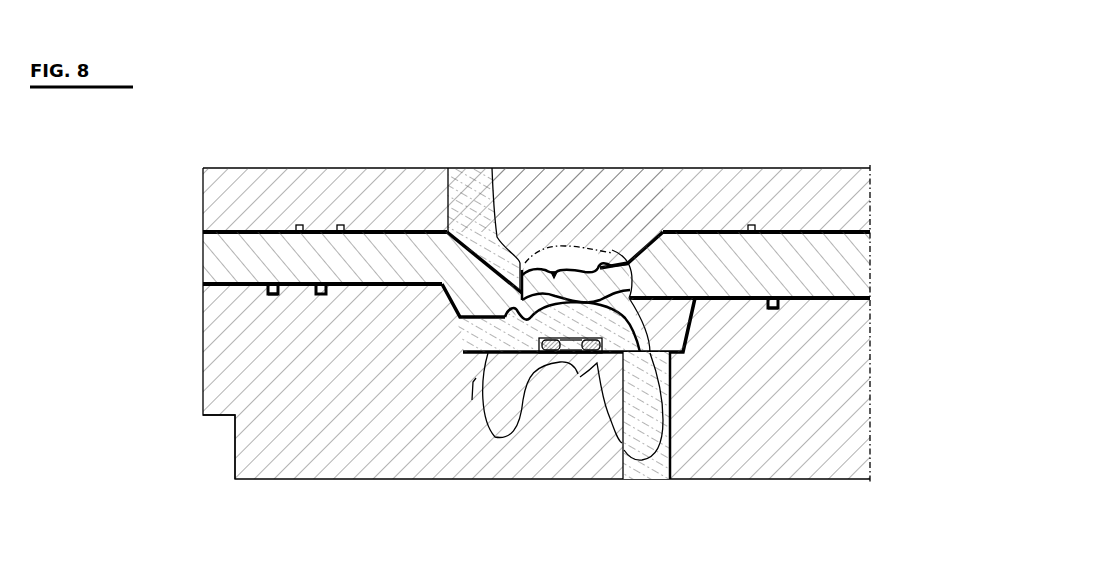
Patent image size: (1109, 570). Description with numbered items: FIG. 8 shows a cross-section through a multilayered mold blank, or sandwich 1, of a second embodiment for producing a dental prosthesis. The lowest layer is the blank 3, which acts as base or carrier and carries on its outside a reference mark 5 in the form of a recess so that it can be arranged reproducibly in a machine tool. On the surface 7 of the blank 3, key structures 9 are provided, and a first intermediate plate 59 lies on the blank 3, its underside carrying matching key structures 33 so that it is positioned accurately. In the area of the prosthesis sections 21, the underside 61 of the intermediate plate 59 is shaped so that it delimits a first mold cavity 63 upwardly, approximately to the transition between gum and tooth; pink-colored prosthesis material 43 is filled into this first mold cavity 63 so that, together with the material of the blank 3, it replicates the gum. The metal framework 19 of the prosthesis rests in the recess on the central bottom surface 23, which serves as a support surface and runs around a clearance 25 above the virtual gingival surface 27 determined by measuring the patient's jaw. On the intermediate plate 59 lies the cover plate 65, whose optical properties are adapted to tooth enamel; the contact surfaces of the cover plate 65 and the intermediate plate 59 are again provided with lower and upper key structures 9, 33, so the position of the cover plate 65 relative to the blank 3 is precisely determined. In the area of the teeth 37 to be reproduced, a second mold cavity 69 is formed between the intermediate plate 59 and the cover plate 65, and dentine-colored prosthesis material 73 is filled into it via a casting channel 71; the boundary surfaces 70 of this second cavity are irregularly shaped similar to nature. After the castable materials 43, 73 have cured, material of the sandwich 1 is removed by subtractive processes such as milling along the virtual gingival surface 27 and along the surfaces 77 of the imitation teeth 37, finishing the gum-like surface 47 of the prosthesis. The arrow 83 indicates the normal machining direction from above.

The mold blank / sandwich structure 1 is at (220, 128).
The blank 3 is at (330, 462).
The reference mark 5 is at (223, 439).
The surface 7 is at (536, 218).
The key structure 9 is at (531, 322).
The metal framework 19 is at (553, 306).
The prosthesis section 21 is at (627, 323).
The central bottom surface 23 is at (570, 353).
The clearance 25 is at (600, 352).
The virtual gingival surface 27 is at (582, 356).
The key structure 33 is at (300, 108).
The prefabricated tooth 37 is at (555, 245).
The prosthesis material 43 is at (670, 317).
The surface of the prosthesis 47 is at (475, 380).
The intermediate plate 59 is at (232, 250).
The underside of intermediate plate 61 is at (540, 352).
The first mold cavity 63 is at (472, 330).
The cover plate 65 is at (232, 193).
The second mold cavity 69 is at (610, 245).
The boundary surface 70 is at (573, 282).
The casting channel 71 is at (467, 175).
The dentine-colored prosthesis material 73 is at (532, 282).
The surface of imitation tooth 77 is at (603, 294).
The normal machining direction 83 is at (418, 97).